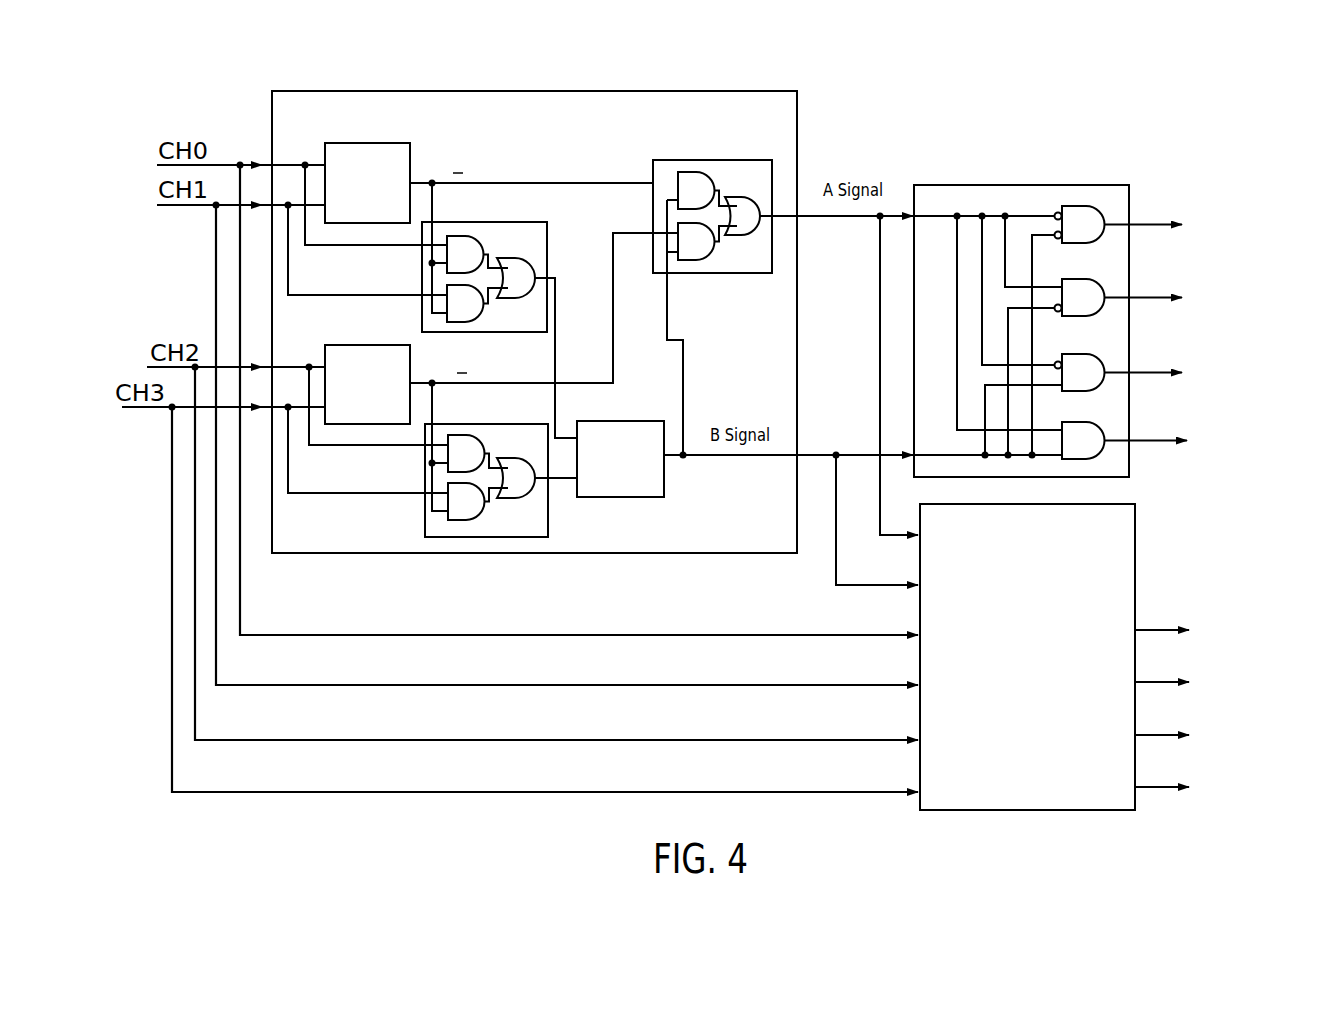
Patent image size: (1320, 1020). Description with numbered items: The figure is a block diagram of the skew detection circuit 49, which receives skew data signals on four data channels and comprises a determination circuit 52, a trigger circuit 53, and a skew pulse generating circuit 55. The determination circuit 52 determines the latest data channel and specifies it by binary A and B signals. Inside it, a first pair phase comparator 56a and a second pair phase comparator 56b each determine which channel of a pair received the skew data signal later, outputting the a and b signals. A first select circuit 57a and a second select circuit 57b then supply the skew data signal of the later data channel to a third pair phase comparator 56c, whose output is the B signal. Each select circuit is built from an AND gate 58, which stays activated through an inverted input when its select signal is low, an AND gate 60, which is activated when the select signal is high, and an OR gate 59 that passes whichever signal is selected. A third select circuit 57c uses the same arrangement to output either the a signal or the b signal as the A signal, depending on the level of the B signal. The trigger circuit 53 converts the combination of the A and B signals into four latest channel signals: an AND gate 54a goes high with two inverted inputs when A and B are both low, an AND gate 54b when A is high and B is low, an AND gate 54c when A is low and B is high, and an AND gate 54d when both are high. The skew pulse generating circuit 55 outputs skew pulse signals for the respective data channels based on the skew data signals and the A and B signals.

The skew detection circuit 49 is at (856, 124).
The determination circuit 52 is at (745, 91).
The trigger circuit 53 is at (947, 185).
The AND gate 54a is at (1097, 239).
The AND gate 54b is at (1097, 312).
The AND gate 54c is at (1097, 387).
The AND gate 54d is at (1097, 455).
The skew pulse generating circuit 55 is at (1135, 538).
The first pair phase comparator 56a is at (410, 150).
The second pair phase comparator 56b is at (361, 345).
The third pair phase comparator 56c is at (642, 497).
The first select circuit 57a is at (422, 277).
The second select circuit 57b is at (427, 473).
The third select circuit 57c is at (653, 210).
The AND gate 58 is at (471, 236).
The OR gate 59 is at (522, 258).
The AND gate 60 is at (492, 321).